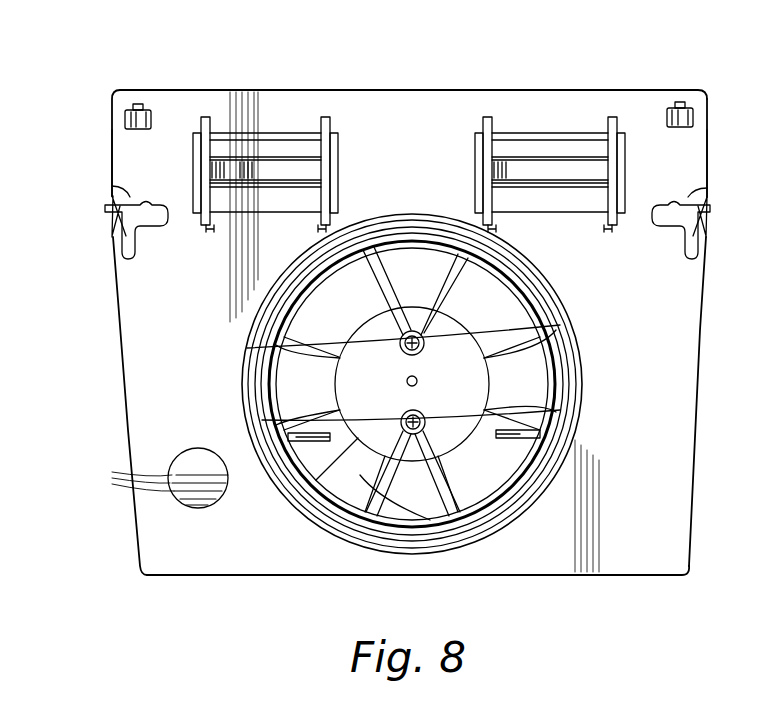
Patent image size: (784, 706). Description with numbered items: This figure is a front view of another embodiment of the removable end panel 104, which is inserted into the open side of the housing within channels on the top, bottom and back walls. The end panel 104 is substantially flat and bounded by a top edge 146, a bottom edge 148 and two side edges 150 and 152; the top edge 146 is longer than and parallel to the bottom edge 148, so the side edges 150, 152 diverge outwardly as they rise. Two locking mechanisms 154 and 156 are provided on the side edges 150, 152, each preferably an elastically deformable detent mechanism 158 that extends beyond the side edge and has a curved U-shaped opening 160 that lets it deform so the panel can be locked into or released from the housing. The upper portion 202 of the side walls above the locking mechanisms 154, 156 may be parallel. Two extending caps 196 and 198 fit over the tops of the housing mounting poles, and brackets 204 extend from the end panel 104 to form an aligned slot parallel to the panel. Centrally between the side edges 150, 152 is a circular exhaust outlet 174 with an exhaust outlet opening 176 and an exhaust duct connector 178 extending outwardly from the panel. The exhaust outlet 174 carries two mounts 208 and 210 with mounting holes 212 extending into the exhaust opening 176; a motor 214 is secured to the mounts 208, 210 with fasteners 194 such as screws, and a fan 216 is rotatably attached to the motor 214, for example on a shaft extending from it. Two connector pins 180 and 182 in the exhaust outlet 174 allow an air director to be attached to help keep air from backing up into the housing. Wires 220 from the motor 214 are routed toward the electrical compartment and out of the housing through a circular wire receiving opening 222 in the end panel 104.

The end panel 104 is at (409, 321).
The top edge 146 is at (407, 90).
The bottom edge 148 is at (440, 576).
The side edge 150 is at (115, 332).
The side edge 152 is at (706, 340).
The locking mechanism 154 is at (103, 213).
The locking mechanism 156 is at (712, 218).
The detent mechanism 158 is at (118, 230).
The opening 160 is at (112, 186).
The exhaust outlet 174 is at (590, 404).
The exhaust outlet opening 176 is at (407, 518).
The exhaust duct connector 178 is at (490, 525).
The connector pin 180 is at (540, 434).
The connector pin 182 is at (288, 436).
The fastener 194 is at (548, 322).
The cap 196 is at (125, 116).
The cap 198 is at (693, 114).
The upper portion 202 is at (112, 162).
The bracket 204 is at (276, 185).
The mount 208 is at (404, 300).
The mount 210 is at (328, 522).
The mounting hole 212 is at (312, 340).
The motor 214 is at (482, 374).
The fan 216 is at (560, 388).
The wires 220 is at (145, 480).
The wire receiving opening 222 is at (170, 468).